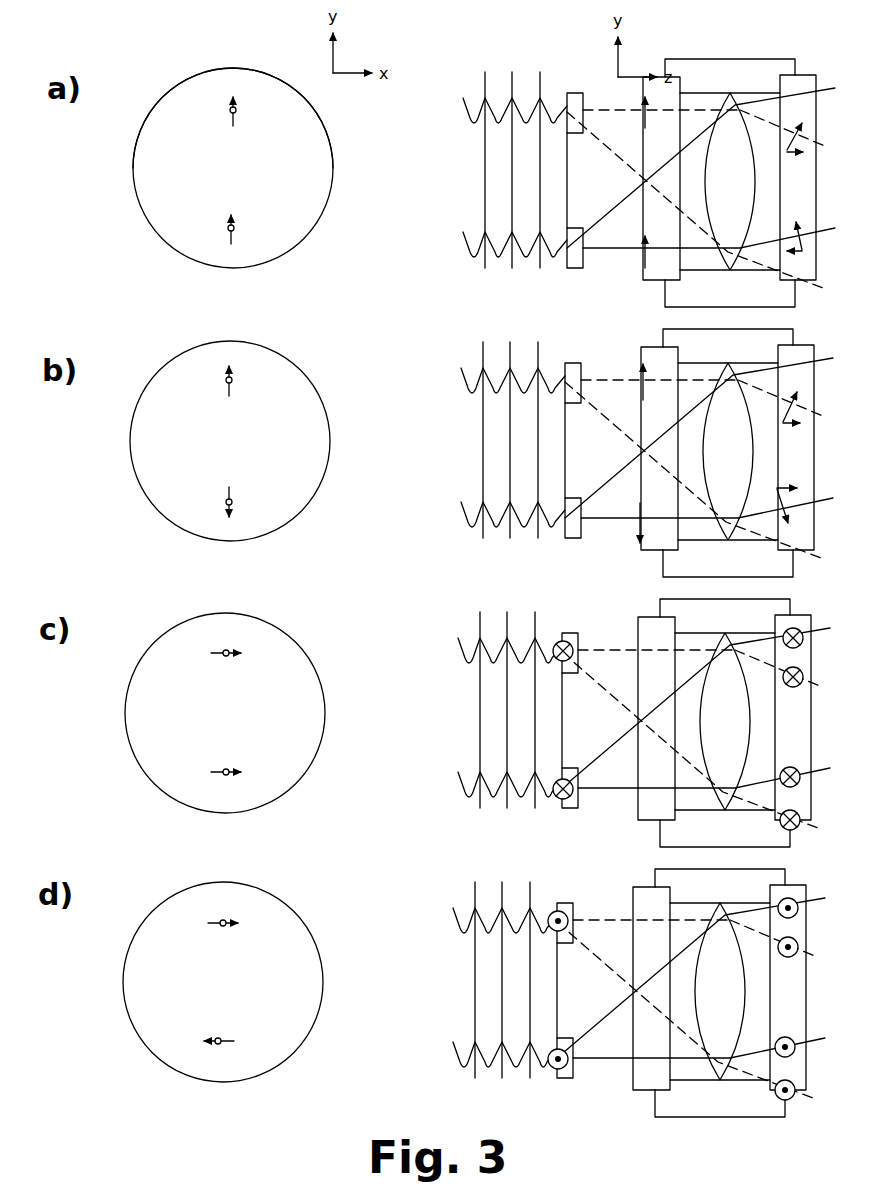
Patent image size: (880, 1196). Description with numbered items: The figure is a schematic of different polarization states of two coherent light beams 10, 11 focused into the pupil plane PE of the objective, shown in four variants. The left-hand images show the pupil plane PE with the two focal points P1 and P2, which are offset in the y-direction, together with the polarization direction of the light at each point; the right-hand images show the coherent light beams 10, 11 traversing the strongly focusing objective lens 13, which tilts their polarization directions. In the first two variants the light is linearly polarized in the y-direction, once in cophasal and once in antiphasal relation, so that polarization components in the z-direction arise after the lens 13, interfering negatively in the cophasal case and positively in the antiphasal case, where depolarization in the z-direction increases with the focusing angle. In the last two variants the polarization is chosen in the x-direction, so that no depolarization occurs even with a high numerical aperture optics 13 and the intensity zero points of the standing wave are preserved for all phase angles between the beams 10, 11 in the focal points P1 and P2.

The coherent light beam 10 is at (460, 246).
The coherent light beam 11 is at (463, 122).
The objective lens 13 is at (730, 96).
The pupil plane PE is at (158, 195).
The focal point P1 is at (246, 229).
The focal point P2 is at (247, 111).